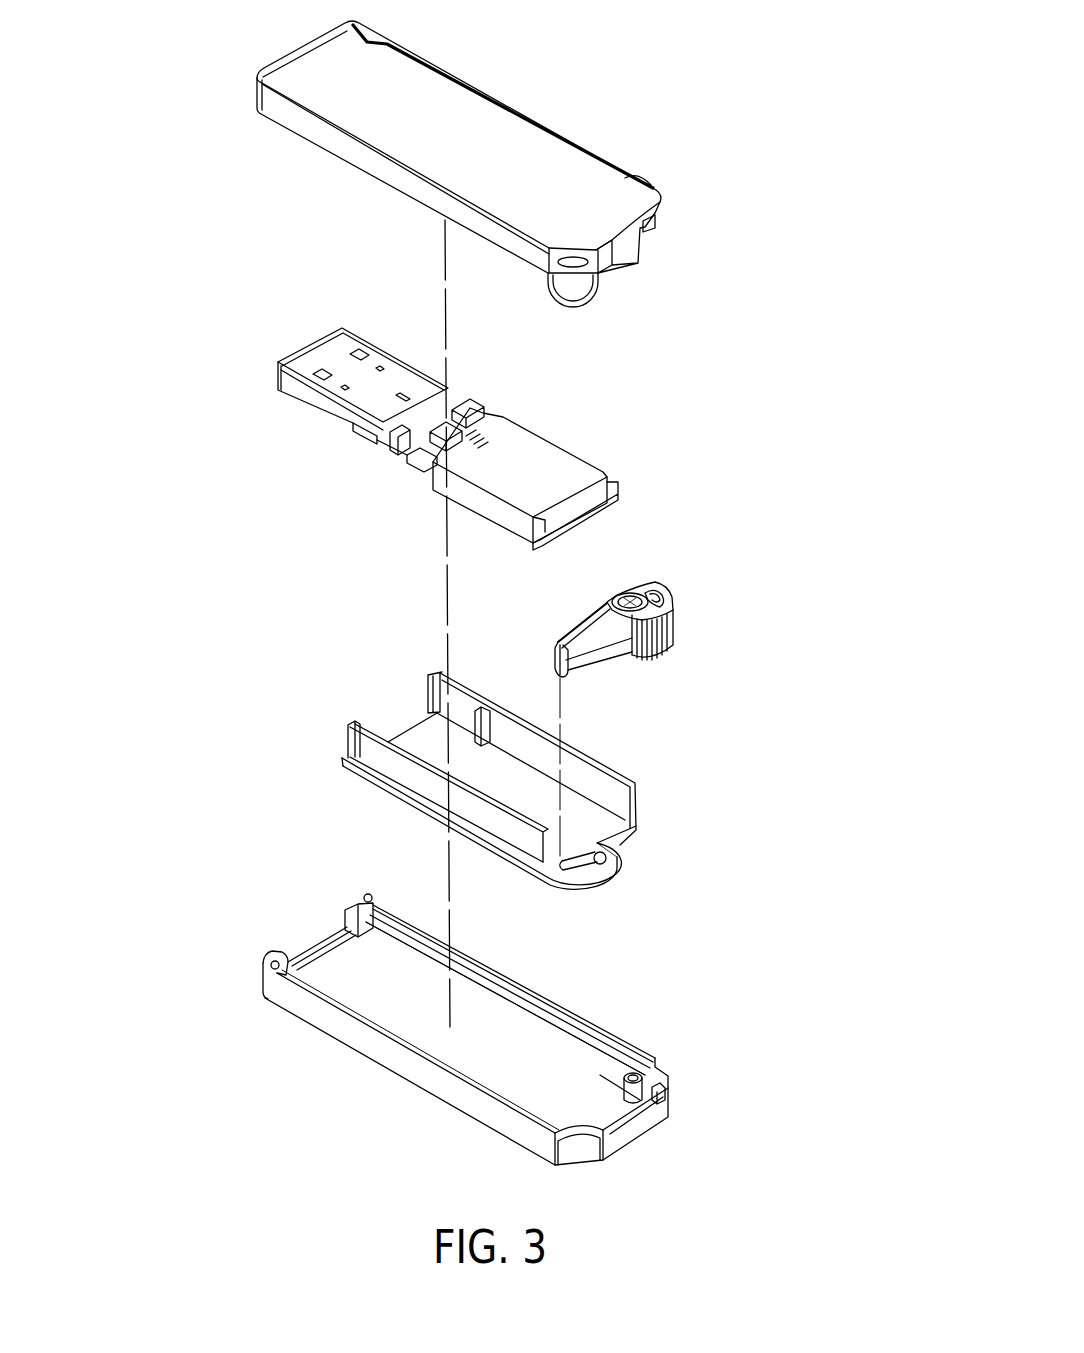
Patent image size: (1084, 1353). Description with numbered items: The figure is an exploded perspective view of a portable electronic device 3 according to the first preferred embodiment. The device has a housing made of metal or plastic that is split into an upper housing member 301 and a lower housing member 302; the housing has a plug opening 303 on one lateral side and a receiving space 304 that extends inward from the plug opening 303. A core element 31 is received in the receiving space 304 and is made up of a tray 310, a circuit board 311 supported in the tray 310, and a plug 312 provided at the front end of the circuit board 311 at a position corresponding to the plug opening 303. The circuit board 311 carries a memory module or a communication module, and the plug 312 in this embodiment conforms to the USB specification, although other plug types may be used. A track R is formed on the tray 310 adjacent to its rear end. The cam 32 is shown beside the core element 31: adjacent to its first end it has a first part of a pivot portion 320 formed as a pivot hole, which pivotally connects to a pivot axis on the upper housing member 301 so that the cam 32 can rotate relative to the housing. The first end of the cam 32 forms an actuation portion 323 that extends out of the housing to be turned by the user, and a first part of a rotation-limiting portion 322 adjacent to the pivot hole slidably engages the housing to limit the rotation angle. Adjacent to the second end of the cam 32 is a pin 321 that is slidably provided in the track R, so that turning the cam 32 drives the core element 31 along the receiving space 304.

The portable electronic device 3 is at (793, 93).
The upper housing member 301 is at (627, 242).
The lower housing member 302 is at (450, 1090).
The plug opening 303 is at (310, 950).
The receiving space 304 is at (400, 1021).
The core element 31 is at (222, 445).
The tray 310 is at (338, 740).
The circuit board 311 is at (410, 425).
The plug 312 is at (312, 398).
The cam 32 is at (672, 581).
The first part of the pivot portion 320 is at (629, 595).
The pin 321 is at (568, 672).
The first part of the rotation-limiting portion 322 is at (673, 595).
The actuation portion 323 is at (657, 635).
The track R is at (612, 862).